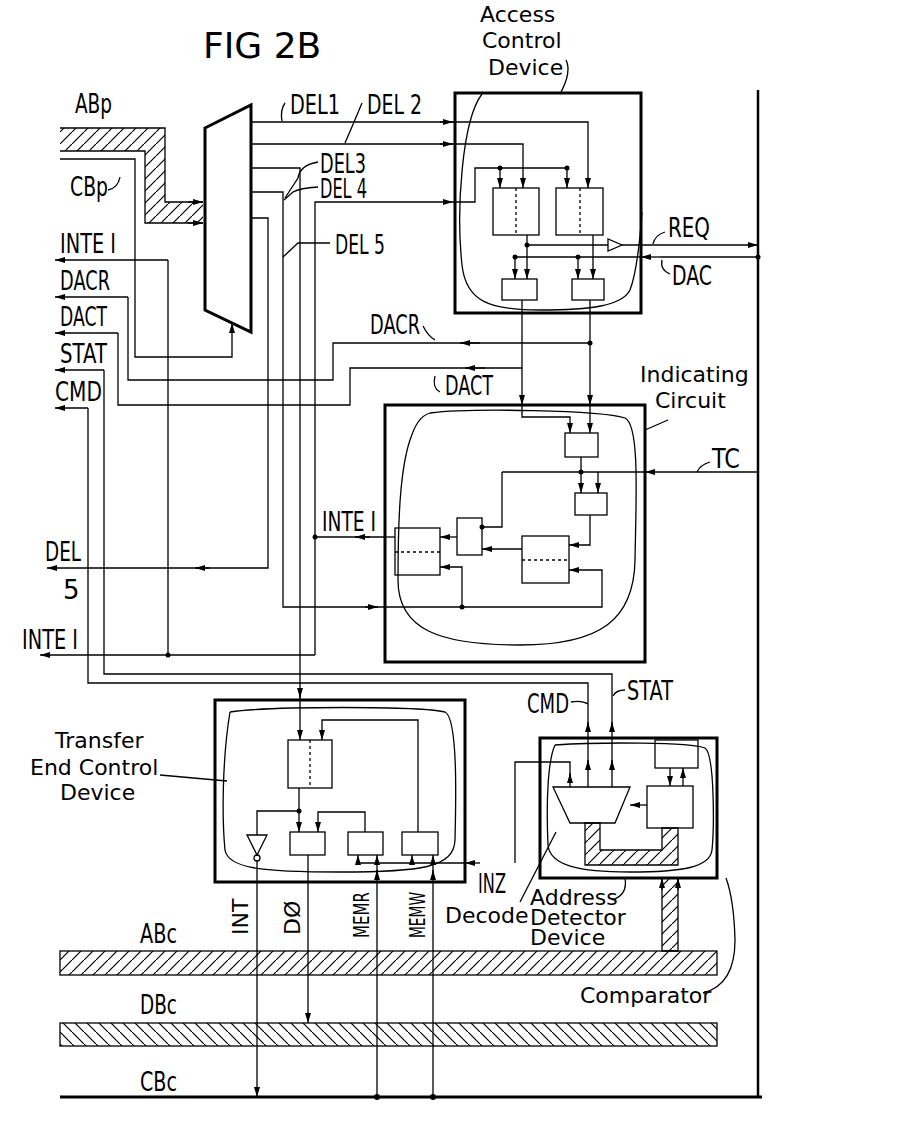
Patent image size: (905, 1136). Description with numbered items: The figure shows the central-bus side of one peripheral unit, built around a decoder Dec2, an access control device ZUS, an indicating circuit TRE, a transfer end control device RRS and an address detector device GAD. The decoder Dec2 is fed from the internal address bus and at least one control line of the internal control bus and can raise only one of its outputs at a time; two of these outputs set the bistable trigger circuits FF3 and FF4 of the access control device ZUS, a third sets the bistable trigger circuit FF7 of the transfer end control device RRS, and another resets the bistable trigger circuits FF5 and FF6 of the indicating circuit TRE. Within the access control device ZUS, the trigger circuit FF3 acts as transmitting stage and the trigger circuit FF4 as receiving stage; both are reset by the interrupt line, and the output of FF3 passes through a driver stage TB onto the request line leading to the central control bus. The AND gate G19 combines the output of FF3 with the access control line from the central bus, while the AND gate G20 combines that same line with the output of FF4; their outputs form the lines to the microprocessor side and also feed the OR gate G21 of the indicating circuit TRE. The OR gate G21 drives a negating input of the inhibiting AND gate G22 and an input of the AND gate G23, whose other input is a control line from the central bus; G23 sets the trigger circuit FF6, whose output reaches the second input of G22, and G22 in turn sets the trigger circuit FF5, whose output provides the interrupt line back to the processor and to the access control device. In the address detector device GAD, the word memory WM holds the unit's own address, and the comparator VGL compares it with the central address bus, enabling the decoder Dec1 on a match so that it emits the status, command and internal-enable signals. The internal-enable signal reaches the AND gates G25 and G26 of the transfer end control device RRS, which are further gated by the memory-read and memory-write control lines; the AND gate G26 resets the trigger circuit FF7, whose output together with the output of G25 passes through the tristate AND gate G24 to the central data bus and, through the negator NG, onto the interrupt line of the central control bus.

The decoder Dec2 is at (228, 218).
The access control device ZUS is at (641, 130).
The bistable trigger circuit FF3 is at (512, 242).
The bistable trigger circuit FF4 is at (597, 188).
The AND gate G19 is at (502, 288).
The AND gate G20 is at (600, 310).
The driver TB is at (610, 238).
The indicating circuit TRE is at (430, 402).
The OR gate G21 is at (565, 446).
The AND gate G22 is at (487, 478).
The AND gate G23 is at (575, 506).
The bistable trigger circuit FF5 is at (438, 512).
The bistable trigger circuit FF6 is at (555, 536).
The transfer end control device RRS is at (465, 736).
The bistable trigger circuit FF7 is at (332, 762).
The negator NG is at (246, 845).
The AND gate G24 is at (312, 832).
The AND gate G25 is at (372, 832).
The AND gate G26 is at (432, 832).
The address detector device GAD is at (662, 738).
The decoder Dec1 is at (591, 805).
The comparator VGL is at (670, 807).
The word memory WM is at (705, 740).